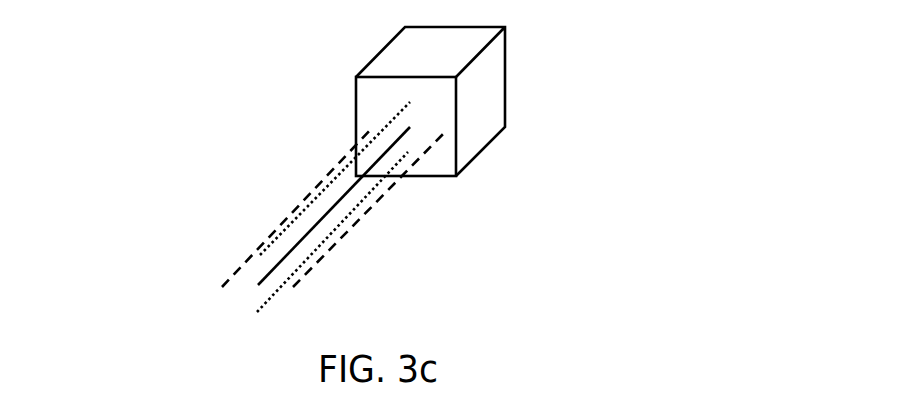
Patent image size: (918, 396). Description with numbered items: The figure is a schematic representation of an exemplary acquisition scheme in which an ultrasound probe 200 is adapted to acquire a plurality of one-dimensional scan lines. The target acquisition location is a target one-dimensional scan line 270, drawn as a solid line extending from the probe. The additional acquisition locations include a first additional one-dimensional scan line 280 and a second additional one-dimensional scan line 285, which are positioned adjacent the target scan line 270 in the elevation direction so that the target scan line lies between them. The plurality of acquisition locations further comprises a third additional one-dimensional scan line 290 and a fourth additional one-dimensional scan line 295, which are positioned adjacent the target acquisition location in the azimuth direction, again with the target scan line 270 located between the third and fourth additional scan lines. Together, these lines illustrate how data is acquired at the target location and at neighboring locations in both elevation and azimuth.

The ultrasound probe 200 is at (503, 85).
The target 1D scan line 270 is at (298, 245).
The first additional 1D scan line 280 is at (237, 268).
The third additional 1D scan line 290 is at (345, 165).
The second additional 1D scan line 285 is at (330, 250).
The fourth additional 1D scan line 295 is at (372, 202).